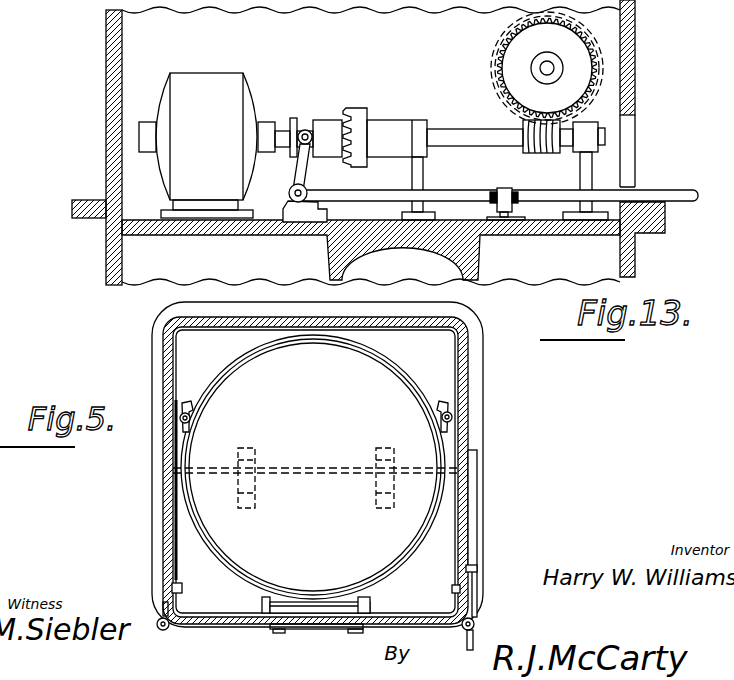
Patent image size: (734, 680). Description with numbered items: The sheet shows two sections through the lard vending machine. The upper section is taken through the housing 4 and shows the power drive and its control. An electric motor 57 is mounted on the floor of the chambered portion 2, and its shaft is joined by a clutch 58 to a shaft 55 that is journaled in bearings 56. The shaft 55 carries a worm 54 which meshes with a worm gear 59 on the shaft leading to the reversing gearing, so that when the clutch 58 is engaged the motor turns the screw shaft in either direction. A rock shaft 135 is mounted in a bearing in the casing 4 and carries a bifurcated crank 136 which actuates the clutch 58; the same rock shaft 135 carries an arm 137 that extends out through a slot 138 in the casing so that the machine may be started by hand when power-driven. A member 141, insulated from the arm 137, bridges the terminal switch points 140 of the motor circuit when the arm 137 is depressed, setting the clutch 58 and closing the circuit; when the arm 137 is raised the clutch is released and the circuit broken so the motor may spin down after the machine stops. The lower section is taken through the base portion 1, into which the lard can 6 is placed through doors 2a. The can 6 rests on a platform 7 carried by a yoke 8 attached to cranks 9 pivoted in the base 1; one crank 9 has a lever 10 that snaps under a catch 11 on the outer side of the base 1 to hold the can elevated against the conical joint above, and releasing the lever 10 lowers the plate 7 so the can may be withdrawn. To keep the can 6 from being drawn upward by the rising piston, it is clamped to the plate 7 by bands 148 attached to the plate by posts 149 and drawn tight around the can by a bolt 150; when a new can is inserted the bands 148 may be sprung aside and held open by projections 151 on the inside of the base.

In FIG. 5, the base portion 1 is at (470, 358).
In FIG. 13, the chambered portion 2 is at (636, 257).
In FIG. 5, the doors 2a is at (230, 620).
In FIG. 13, the housing 4 is at (636, 84).
In FIG. 5, the can 6 is at (223, 385).
In FIG. 5, the platform 7 is at (315, 470).
In FIG. 5, the yoke 8 is at (332, 473).
In FIG. 5, the cranks 9 is at (455, 453).
In FIG. 5, the lever 10 is at (477, 548).
In FIG. 5, the catch 11 is at (497, 606).
In FIG. 13, the worm 54 is at (528, 128).
In FIG. 13, the shaft 55 is at (460, 146).
In FIG. 13, the bearings 56 is at (413, 120).
In FIG. 13, the electric motor 57 is at (214, 145).
In FIG. 13, the clutch 58 is at (350, 108).
In FIG. 13, the worm gear 59 is at (510, 57).
In FIG. 13, the rock shaft 135 is at (300, 204).
In FIG. 13, the bifurcated crank 136 is at (300, 168).
In FIG. 13, the arm 137 is at (383, 191).
In FIG. 13, the slot 138 is at (626, 138).
In FIG. 13, the terminal switch points 140 is at (502, 191).
In FIG. 13, the member 141 is at (517, 192).
In FIG. 5, the bands 148 is at (193, 530).
In FIG. 5, the posts 149 is at (440, 420).
In FIG. 5, the bolt 150 is at (302, 605).
In FIG. 5, the projections 151 is at (172, 587).